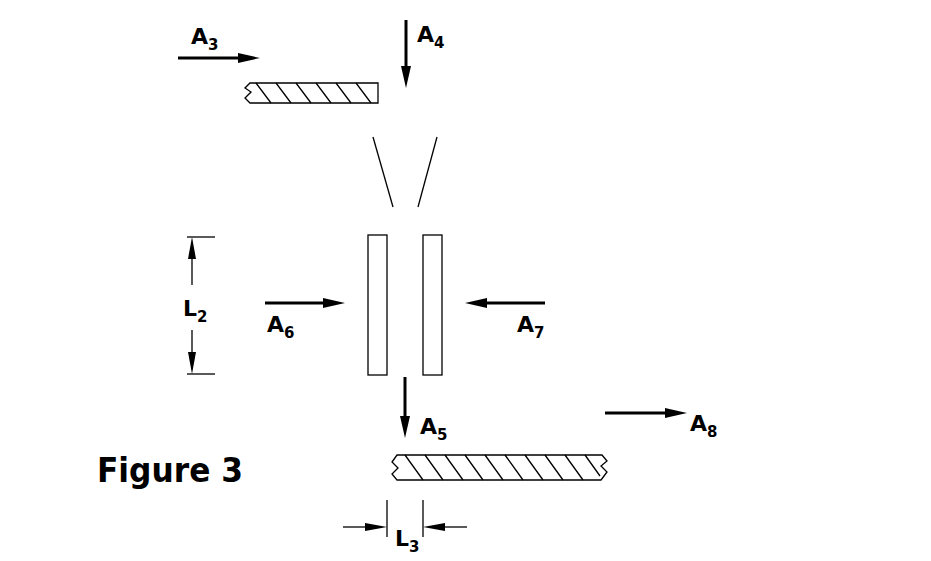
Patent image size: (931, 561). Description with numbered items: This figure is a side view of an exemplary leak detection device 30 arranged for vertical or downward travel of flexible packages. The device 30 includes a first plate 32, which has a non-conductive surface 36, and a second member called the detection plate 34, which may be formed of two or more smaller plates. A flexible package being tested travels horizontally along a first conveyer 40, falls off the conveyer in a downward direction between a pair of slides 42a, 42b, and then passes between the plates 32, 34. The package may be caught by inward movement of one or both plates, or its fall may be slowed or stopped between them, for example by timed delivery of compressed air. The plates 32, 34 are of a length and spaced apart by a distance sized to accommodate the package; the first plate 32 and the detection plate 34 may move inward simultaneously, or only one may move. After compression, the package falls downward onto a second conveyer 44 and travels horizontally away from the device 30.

The leak detection device 30 is at (460, 312).
The first plate 32 is at (442, 262).
The detection plate 34 is at (368, 262).
The non-conductive surface 36 is at (412, 322).
The first conveyer 40 is at (325, 83).
The slide 42a is at (378, 165).
The slide 42b is at (432, 165).
The second conveyer 44 is at (528, 470).